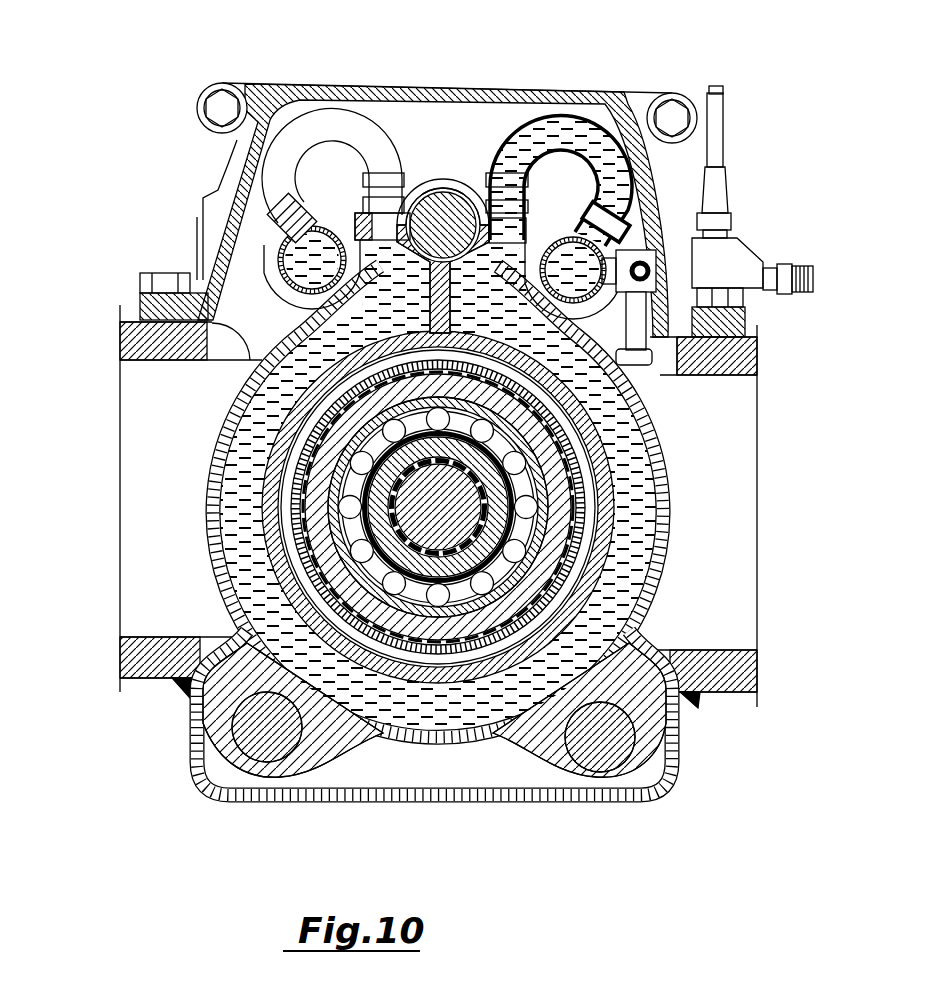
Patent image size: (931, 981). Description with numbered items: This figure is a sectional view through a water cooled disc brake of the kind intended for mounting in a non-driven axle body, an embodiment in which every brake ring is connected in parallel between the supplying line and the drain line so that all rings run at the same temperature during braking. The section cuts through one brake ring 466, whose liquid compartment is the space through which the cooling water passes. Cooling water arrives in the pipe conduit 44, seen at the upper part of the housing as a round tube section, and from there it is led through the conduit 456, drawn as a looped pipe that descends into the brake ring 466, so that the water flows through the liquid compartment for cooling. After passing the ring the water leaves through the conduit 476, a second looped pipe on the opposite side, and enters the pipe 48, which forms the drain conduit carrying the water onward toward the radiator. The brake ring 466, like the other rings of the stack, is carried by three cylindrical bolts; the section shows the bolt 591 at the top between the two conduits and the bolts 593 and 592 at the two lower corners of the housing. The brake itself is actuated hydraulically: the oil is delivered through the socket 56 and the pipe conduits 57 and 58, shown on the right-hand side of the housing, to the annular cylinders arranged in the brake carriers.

The conduit 476 is at (333, 124).
The pipe 48 is at (313, 233).
The cylindrical bolt 591 is at (443, 179).
The pipe conduit 44 is at (567, 240).
The conduit 456 is at (559, 135).
The pipe conduit 58 is at (642, 260).
The socket 56 is at (730, 262).
The brake ring 466 is at (415, 439).
The pipe conduit 57 is at (683, 373).
The cylindrical bolt 593 is at (205, 753).
The cylindrical bolt 592 is at (661, 765).